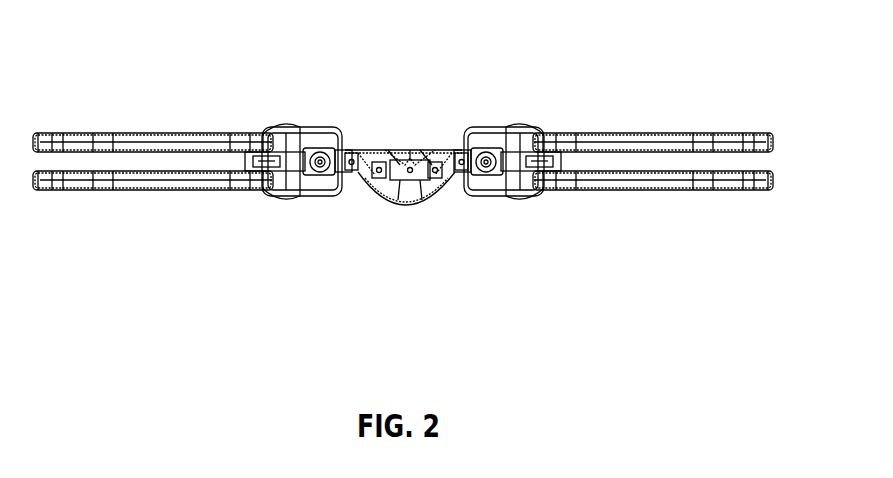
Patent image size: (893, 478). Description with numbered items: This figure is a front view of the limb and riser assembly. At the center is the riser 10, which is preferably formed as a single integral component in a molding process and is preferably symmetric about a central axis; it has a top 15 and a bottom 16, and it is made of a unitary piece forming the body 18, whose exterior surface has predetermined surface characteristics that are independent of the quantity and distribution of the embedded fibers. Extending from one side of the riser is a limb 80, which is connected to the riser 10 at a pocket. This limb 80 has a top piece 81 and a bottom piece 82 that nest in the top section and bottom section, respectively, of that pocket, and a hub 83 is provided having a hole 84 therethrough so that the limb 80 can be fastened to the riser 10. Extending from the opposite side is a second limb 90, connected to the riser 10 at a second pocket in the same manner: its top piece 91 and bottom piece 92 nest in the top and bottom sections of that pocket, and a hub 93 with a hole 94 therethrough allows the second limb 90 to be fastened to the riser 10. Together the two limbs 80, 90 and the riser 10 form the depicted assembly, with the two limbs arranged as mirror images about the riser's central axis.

The riser 10 is at (373, 143).
The top 15 is at (420, 150).
The bottom 16 is at (397, 195).
The body 18 is at (458, 140).
The limb 80 is at (112, 130).
The top piece 81 is at (180, 133).
The bottom piece 82 is at (127, 190).
The hub 83 is at (318, 176).
The hole 84 is at (290, 170).
The second limb 90 is at (621, 126).
The top piece 91 is at (726, 133).
The bottom piece 92 is at (667, 190).
The hub 93 is at (514, 190).
The hole 94 is at (500, 185).